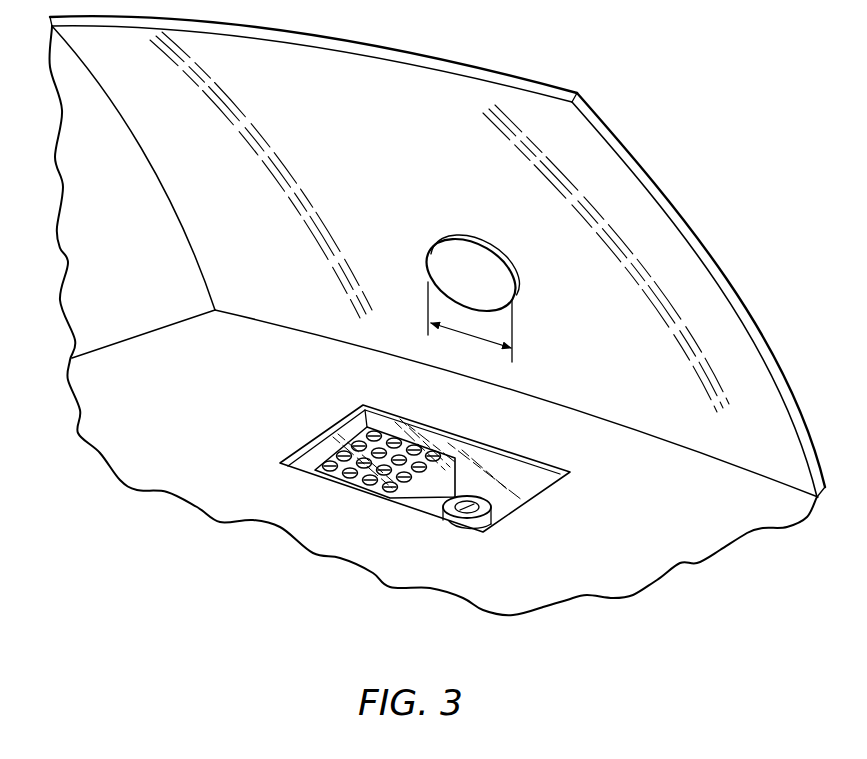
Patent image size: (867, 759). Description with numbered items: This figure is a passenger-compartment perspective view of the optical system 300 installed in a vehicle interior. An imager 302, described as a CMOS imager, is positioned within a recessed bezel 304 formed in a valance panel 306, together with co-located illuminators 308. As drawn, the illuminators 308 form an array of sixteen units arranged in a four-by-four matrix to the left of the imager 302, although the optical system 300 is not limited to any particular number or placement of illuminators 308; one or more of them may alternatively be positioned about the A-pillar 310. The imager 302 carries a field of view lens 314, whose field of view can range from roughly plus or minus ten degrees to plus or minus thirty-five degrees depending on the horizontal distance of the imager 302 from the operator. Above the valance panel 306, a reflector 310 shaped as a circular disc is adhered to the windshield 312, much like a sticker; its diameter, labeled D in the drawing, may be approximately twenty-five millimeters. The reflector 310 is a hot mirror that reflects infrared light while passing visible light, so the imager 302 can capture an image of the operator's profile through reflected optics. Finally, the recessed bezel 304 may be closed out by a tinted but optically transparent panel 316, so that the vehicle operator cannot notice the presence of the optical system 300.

The optical system 300 is at (311, 184).
The imager 302 is at (437, 509).
The recessed bezel 304 is at (388, 425).
The valance panel 306 is at (199, 412).
The illuminators 308 is at (315, 470).
The reflector 310 is at (122, 252).
The windshield 312 is at (417, 182).
The field of view lens 314 is at (498, 505).
The optically transparent panel 316 is at (505, 478).